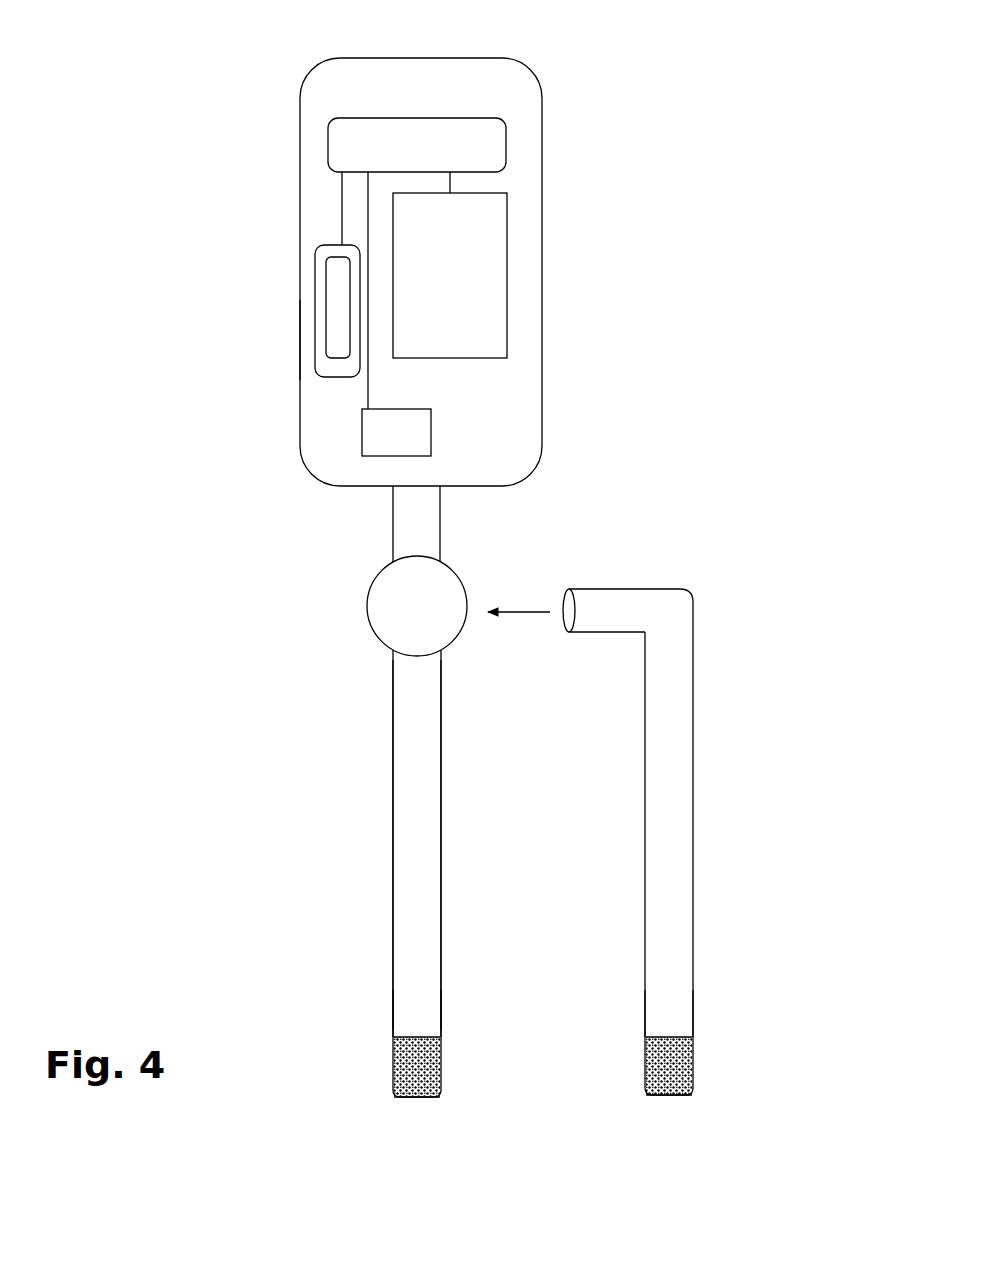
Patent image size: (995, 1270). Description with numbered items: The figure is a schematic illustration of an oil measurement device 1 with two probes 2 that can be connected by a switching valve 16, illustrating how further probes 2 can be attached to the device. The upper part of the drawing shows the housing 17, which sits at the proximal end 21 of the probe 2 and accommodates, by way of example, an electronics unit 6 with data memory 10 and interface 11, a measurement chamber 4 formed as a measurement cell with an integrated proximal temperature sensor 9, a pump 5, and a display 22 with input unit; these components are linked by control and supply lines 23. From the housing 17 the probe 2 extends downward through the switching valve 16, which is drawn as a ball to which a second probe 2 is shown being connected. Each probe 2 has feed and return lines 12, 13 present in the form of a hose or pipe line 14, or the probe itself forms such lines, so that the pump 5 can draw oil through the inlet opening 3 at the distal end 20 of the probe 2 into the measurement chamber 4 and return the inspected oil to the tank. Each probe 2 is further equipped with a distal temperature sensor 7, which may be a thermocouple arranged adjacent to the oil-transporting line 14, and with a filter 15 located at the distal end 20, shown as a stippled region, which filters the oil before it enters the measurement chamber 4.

The oil measurement device 1 is at (650, 305).
The probe 2 is at (436, 788).
The inlet opening 3 is at (423, 1106).
The measurement chamber 4 is at (318, 250).
The pump 5 is at (363, 435).
The electronics unit 6 is at (350, 130).
The distal temperature sensor 7 is at (366, 985).
The proximal temperature sensor 9 is at (267, 289).
The data memory 10 is at (319, 104).
The interface 11 is at (319, 104).
The feed line 12 is at (340, 845).
The return line 13 is at (340, 845).
The hose or pipe line 14 is at (370, 746).
The filter 15 is at (645, 1060).
The switching valve 16 is at (453, 582).
The housing 17 is at (542, 382).
The distal end of the probe 20 is at (362, 1058).
The proximal end of the probe 21 is at (376, 516).
The display with input unit 22 is at (504, 258).
The control and supply lines 23 is at (342, 185).